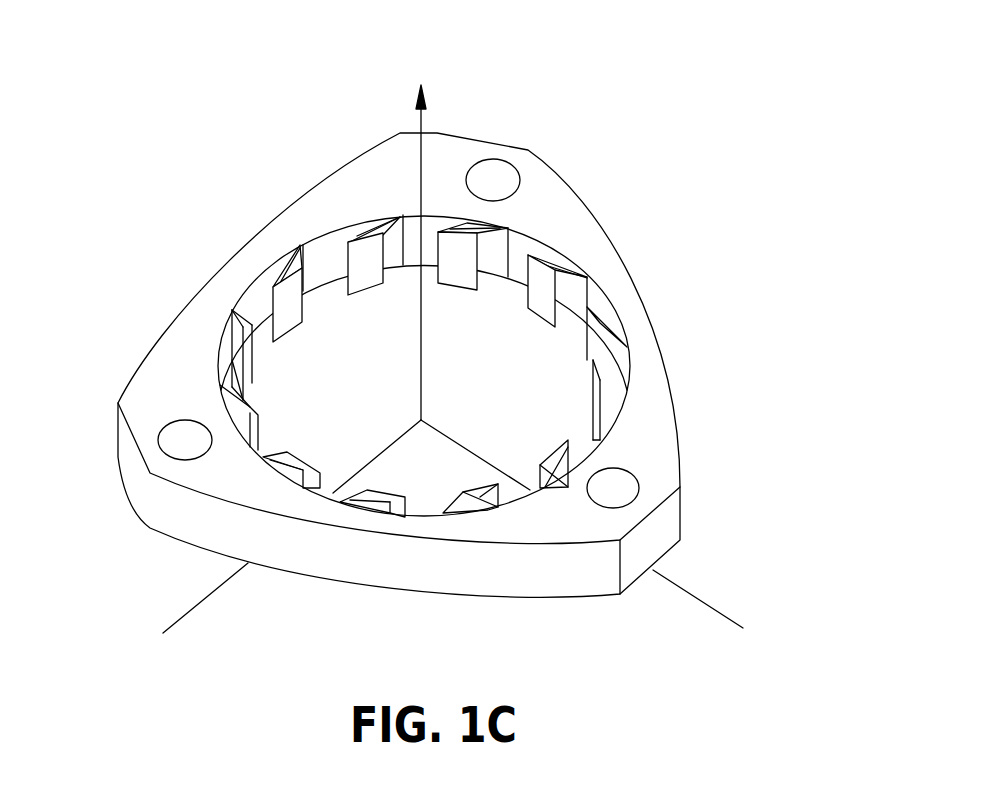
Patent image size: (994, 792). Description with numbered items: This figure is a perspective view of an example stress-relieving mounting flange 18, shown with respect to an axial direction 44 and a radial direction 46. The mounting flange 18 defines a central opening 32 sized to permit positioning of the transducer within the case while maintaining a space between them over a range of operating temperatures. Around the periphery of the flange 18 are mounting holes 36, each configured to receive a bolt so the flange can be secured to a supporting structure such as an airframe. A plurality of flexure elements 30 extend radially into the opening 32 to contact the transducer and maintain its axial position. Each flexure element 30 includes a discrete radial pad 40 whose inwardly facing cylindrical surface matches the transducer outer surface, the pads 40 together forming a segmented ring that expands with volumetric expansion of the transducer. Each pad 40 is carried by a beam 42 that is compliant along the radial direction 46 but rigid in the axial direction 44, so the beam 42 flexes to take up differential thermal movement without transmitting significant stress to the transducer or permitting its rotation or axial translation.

The mounting flange 18 is at (519, 56).
The flexure element 30 is at (556, 239).
The opening 32 is at (392, 365).
The mounting hole 36 is at (490, 177).
The radial pad 40 is at (538, 290).
The beam 42 is at (578, 290).
The axial direction 44 is at (418, 128).
The radial direction 46 is at (722, 613).